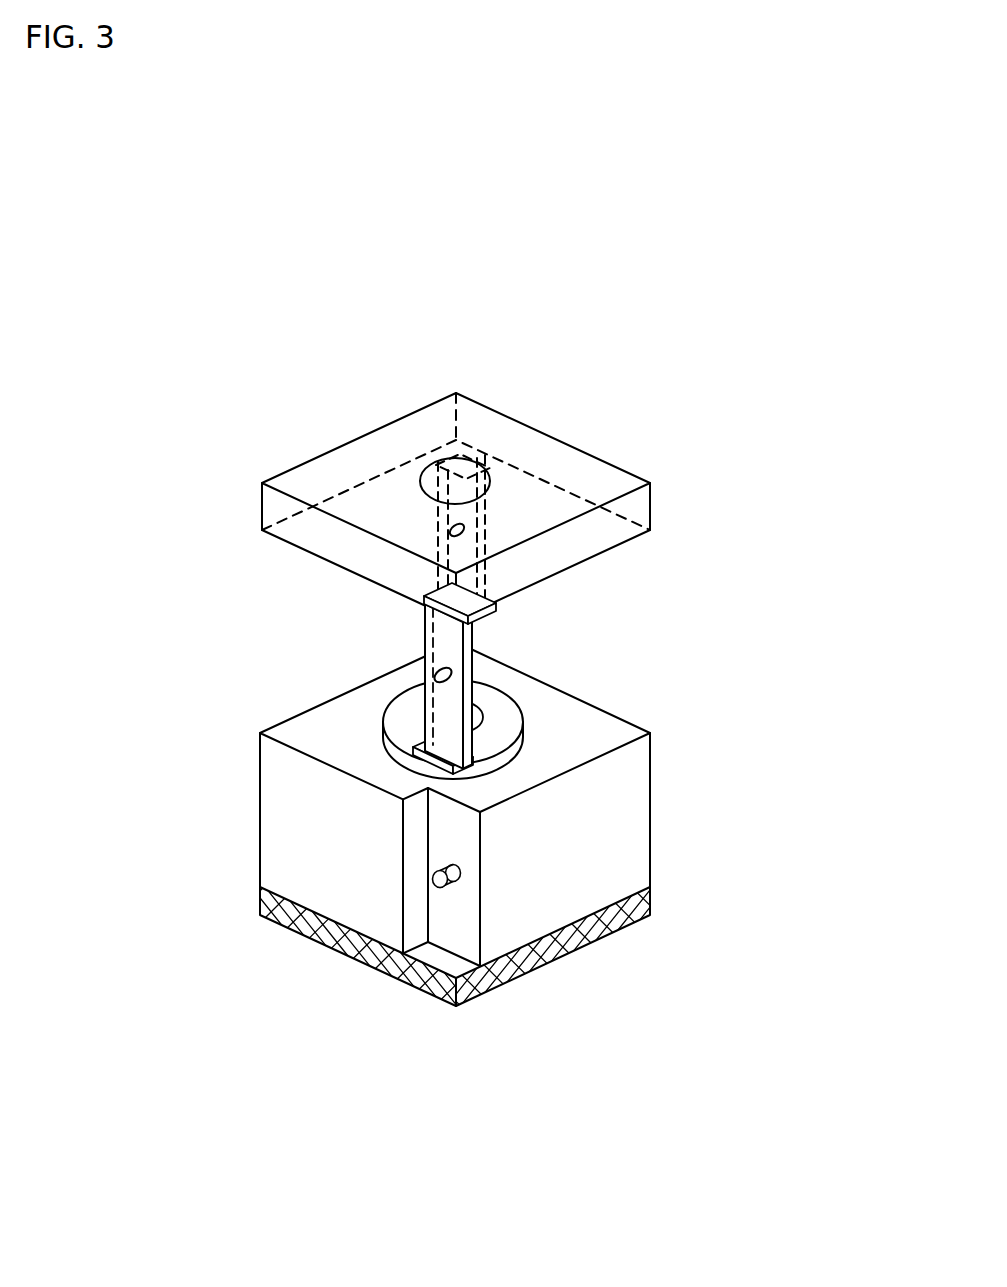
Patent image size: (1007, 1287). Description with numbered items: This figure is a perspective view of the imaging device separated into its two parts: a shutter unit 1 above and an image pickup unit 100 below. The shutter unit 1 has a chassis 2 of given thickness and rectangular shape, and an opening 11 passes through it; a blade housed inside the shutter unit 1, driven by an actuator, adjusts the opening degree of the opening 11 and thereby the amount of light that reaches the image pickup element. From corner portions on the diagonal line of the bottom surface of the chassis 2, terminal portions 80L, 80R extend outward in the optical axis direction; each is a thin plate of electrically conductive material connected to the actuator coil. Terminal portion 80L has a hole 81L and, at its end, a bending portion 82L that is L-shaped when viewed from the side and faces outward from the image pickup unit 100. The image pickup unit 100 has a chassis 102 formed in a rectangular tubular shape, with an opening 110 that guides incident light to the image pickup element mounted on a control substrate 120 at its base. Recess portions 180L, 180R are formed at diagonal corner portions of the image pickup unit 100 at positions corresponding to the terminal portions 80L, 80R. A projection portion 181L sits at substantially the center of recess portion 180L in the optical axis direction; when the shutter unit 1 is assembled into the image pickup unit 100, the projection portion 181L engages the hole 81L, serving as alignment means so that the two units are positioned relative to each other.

The shutter unit 1 is at (494, 470).
The chassis 2 is at (550, 462).
The opening 11 is at (435, 478).
The terminal portion 80L is at (445, 628).
The terminal portion 80R is at (473, 540).
The hole 81L is at (427, 661).
The bending portion 82L is at (427, 752).
The image pickup unit 100 is at (471, 872).
The chassis 102 is at (275, 768).
The opening 110 is at (480, 717).
The control substrate 120 is at (312, 930).
The recess portion 180L is at (457, 920).
The recess portion 180R is at (488, 667).
The projection portion 181L is at (440, 887).